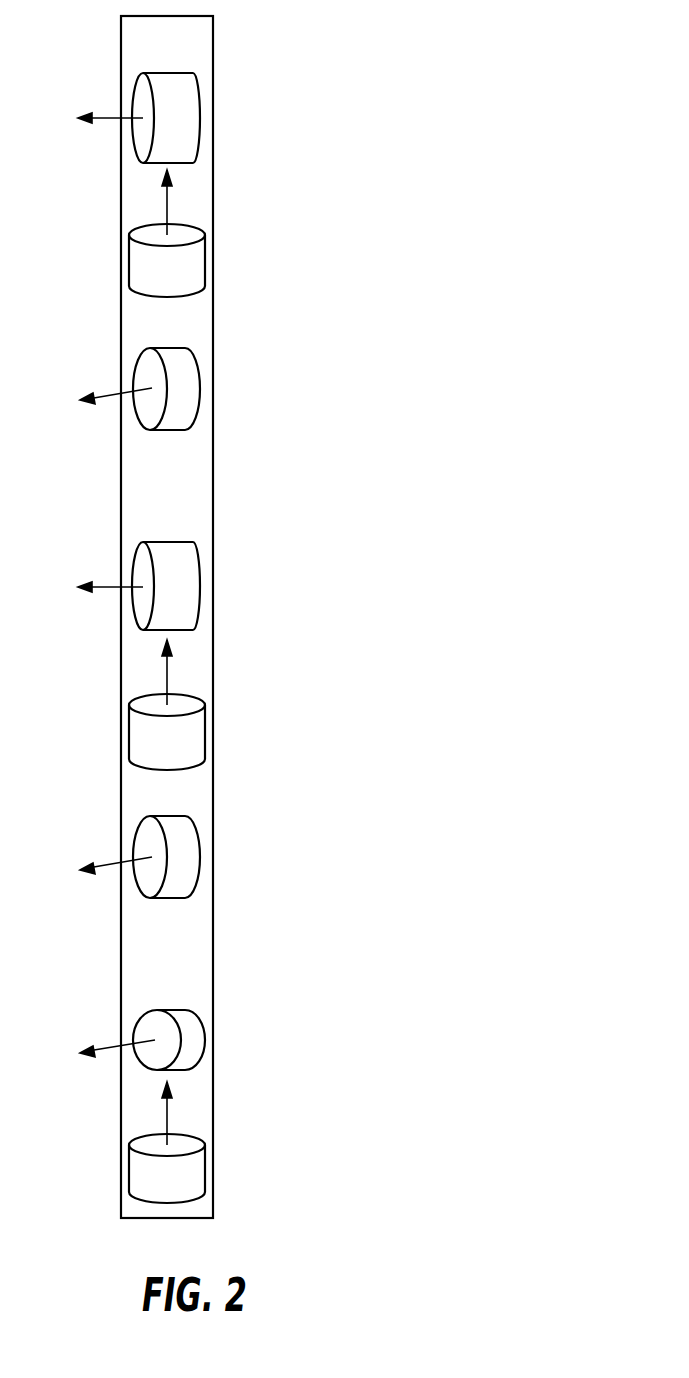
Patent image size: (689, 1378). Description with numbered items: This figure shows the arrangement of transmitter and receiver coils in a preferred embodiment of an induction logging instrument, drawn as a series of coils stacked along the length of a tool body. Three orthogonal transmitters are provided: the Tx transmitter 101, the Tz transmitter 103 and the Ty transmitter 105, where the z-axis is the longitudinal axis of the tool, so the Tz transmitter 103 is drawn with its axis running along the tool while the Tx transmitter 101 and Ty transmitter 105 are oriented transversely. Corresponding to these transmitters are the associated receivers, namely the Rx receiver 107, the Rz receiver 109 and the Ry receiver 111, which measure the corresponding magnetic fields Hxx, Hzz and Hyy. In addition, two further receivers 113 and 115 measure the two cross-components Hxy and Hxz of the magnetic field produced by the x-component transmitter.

The Tx transmitter 101 is at (252, 100).
The Tz transmitter 103 is at (252, 250).
The Ty transmitter 105 is at (252, 367).
The Rx receiver 107 is at (252, 572).
The Rz receiver 109 is at (252, 720).
The Ry receiver 111 is at (252, 842).
The cross-component receiver 113 is at (270, 1030).
The cross-component receiver 115 is at (270, 1160).